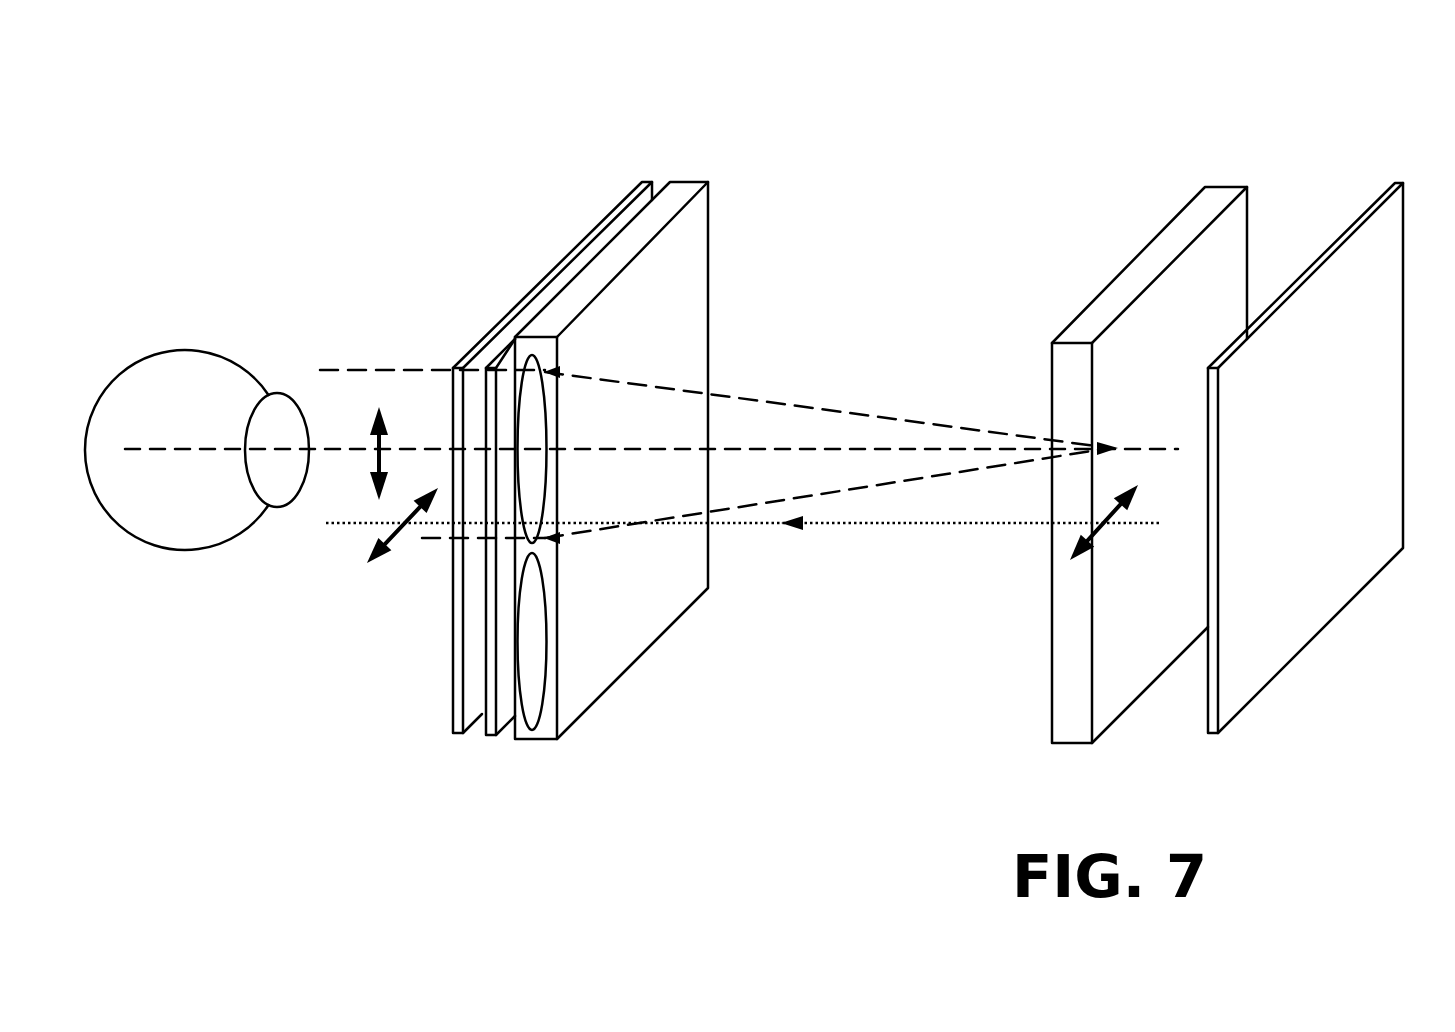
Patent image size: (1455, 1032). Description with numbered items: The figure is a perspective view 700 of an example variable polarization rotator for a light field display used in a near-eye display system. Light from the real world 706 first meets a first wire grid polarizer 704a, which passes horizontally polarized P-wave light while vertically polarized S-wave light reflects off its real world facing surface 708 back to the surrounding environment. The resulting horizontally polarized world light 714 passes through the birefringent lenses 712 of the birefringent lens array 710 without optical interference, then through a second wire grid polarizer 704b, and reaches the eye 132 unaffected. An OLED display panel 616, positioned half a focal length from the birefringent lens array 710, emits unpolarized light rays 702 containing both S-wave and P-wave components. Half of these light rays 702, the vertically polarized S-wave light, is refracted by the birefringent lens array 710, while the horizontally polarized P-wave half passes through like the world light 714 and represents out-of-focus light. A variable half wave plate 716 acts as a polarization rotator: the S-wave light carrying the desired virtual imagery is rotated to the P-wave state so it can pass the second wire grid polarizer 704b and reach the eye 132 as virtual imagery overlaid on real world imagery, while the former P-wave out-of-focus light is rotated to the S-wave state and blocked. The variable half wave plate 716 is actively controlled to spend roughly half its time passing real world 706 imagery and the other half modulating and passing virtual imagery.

The perspective view 700 is at (992, 82).
The eye 132 is at (190, 552).
The light rays 702 is at (892, 417).
The horizontally polarized world light 714 is at (938, 524).
The second wire grid polarizer 704b is at (456, 732).
The variable half wave plate 716 is at (485, 740).
The birefringent lens array 710 is at (529, 740).
The birefringent lenses 712 is at (540, 725).
The OLED display panel 616 is at (1068, 747).
The first wire grid polarizer 704a is at (1223, 710).
The real world facing surface 708 is at (1300, 623).
The real world 706 is at (1446, 576).